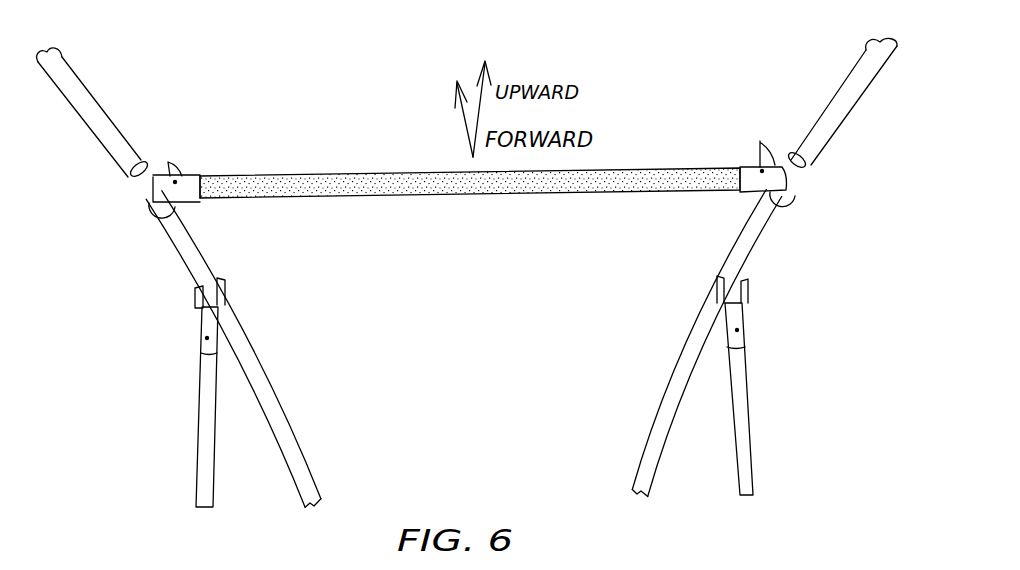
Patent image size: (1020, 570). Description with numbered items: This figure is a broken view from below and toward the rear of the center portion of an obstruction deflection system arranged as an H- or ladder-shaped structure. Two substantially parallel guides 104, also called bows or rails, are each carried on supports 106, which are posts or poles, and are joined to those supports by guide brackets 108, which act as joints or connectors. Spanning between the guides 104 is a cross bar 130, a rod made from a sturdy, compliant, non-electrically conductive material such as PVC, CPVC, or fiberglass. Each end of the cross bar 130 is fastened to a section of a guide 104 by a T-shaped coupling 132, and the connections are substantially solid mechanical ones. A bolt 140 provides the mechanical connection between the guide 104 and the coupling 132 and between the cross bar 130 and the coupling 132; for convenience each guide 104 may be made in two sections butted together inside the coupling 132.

The guide 104 is at (96, 100).
The support 106 is at (197, 468).
The guide bracket 108 is at (200, 326).
The cross bar 130 is at (452, 192).
The T-shaped coupling 132 is at (150, 197).
The bolt 140 is at (168, 165).